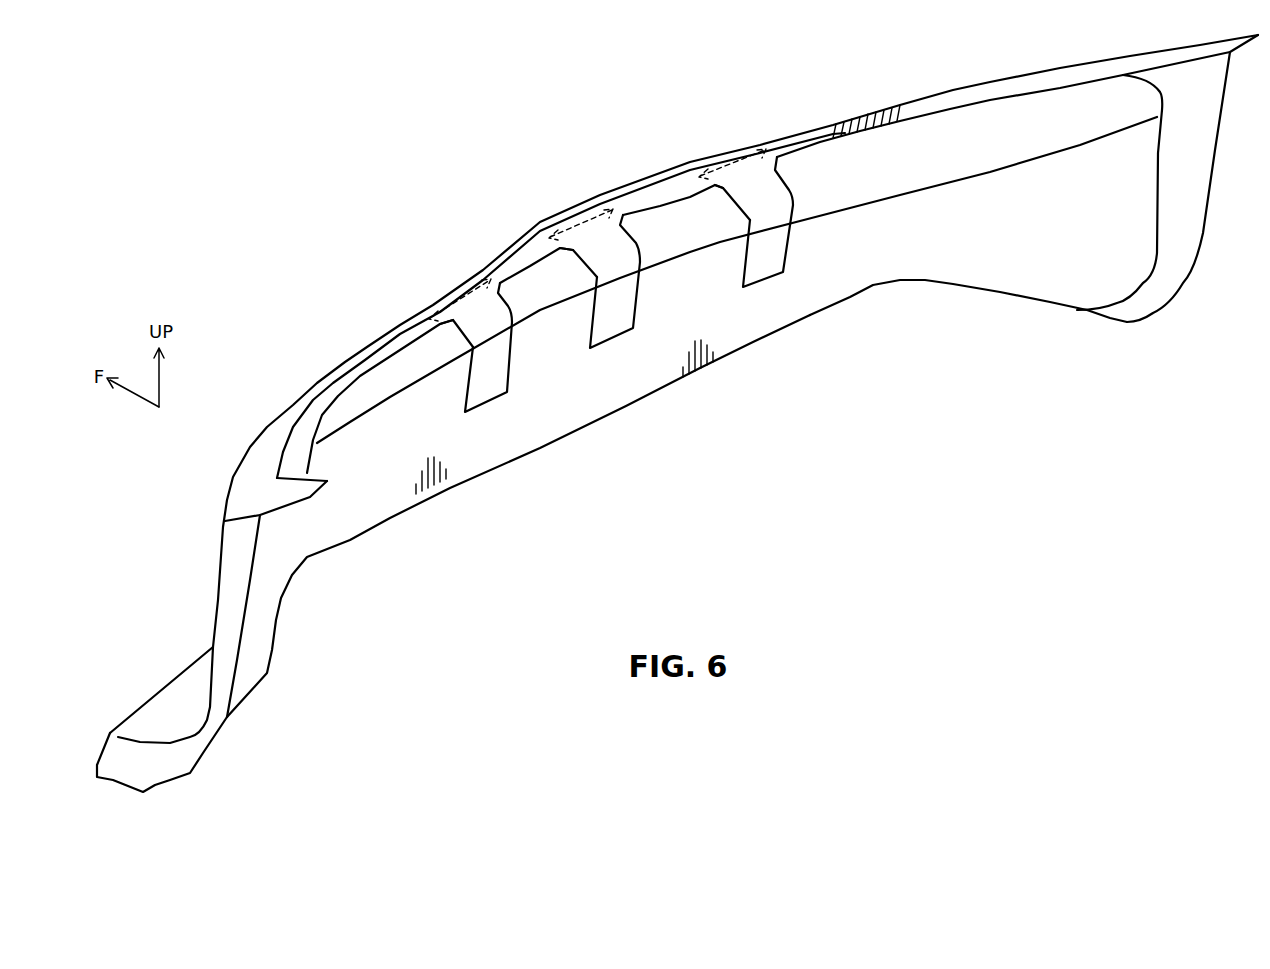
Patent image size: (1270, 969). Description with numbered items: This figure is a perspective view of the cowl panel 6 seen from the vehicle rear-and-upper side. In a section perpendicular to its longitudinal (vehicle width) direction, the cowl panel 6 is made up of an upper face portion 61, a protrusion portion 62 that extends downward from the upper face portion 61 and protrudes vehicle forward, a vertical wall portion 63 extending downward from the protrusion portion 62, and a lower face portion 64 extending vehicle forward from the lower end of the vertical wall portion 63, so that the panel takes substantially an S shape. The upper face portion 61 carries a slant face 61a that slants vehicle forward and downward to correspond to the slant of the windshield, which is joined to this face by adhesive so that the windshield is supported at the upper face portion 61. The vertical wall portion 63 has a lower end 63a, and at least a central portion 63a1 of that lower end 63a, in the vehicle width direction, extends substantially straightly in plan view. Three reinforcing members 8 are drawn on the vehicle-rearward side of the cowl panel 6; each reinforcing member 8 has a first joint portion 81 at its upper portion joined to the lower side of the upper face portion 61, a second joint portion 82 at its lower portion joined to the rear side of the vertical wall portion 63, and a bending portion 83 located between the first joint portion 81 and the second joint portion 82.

The cowl panel 6 is at (600, 131).
The upper face portion 61 is at (740, 281).
The slant face 61a is at (333, 373).
The protrusion portion 62 is at (964, 157).
The vertical wall portion 63 is at (721, 384).
The lower end 63a is at (988, 292).
The central portion 63a1 is at (626, 408).
The lower face portion 64 is at (185, 692).
The reinforcing member 8 is at (601, 290).
The first joint portion 81 is at (428, 302).
The second joint portion 82 is at (487, 385).
The bending portion 83 is at (500, 330).